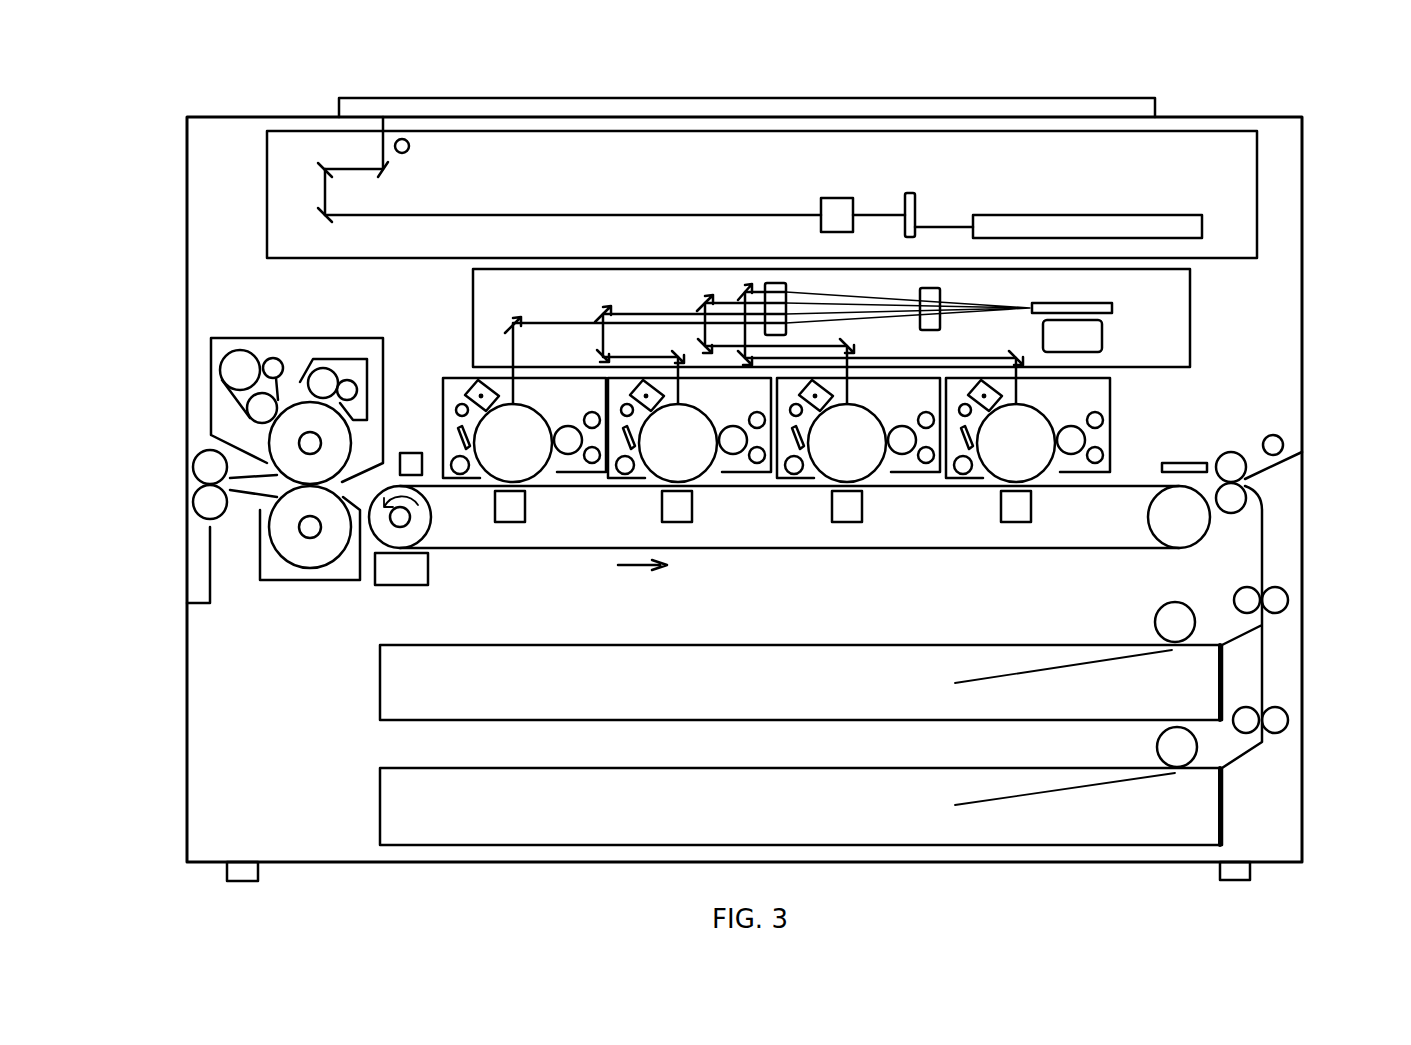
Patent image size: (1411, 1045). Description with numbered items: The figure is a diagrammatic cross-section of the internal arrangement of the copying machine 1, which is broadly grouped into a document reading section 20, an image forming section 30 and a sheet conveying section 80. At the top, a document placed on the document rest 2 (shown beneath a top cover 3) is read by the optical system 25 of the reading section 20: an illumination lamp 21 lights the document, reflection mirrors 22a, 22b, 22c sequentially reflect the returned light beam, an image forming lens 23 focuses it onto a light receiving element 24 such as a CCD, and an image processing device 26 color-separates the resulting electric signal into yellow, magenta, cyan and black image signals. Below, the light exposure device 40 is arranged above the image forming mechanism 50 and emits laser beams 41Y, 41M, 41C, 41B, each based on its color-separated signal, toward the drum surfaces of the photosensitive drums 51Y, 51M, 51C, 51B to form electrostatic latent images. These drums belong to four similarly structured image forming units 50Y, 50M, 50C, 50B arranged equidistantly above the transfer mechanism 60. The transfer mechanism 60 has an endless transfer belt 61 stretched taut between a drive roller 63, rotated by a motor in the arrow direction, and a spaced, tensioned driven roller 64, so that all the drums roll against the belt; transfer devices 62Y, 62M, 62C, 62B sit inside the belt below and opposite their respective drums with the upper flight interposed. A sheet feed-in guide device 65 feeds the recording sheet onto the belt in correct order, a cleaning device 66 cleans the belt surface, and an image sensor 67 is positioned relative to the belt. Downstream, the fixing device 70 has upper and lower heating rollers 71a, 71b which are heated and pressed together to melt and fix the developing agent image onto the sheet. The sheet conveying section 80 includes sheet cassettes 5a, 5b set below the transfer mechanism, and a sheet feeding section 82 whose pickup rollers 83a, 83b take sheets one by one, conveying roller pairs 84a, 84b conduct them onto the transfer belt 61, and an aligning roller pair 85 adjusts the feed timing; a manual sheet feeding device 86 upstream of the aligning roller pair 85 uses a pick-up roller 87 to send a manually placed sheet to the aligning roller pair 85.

The copying machine 1 is at (150, 352).
The document rest 2 is at (1197, 117).
The top cover 3 is at (790, 100).
The document reading section 20 is at (1268, 216).
The illumination lamp 21 is at (409, 146).
The reflection mirror 22a is at (386, 172).
The reflection mirror 22b is at (320, 170).
The reflection mirror 22c is at (320, 216).
The image forming lens 23 is at (838, 198).
The light receiving element 24 is at (912, 193).
The optical system 25 is at (592, 180).
The image processing device 26 is at (1156, 215).
The light exposure device 40 is at (1190, 306).
The laser beam 41B is at (550, 325).
The laser beam 41C is at (648, 316).
The laser beam 41M is at (718, 300).
The laser beam 41Y is at (810, 305).
The image forming section 30 is at (1230, 380).
The image forming mechanism 50 is at (1113, 430).
The image forming unit 50B is at (524, 456).
The image forming unit 50C is at (689, 456).
The image forming unit 50M is at (870, 456).
The image forming unit 50Y is at (1066, 428).
The photosensitive drum 51B is at (513, 443).
The photosensitive drum 51C is at (678, 443).
The photosensitive drum 51M is at (847, 443).
The photosensitive drum 51Y is at (1016, 443).
The transfer mechanism 60 is at (785, 560).
The transfer belt 61 is at (1012, 549).
The transfer device 62B is at (510, 522).
The transfer device 62C is at (682, 522).
The transfer device 62M is at (847, 522).
The transfer device 62Y is at (1031, 507).
The drive roller 63 is at (432, 517).
The driven roller 64 is at (1179, 548).
The sheet feed-in guide device 65 is at (1175, 464).
The cleaning device 66 is at (418, 575).
The image sensor 67 is at (411, 453).
The fixing device 70 is at (292, 338).
The heating roller 71a is at (270, 443).
The heating roller 71b is at (308, 568).
The sheet conveying section 80 is at (1272, 536).
The sheet feeding section 82 is at (1280, 677).
The pickup roller 83a is at (1155, 620).
The pickup roller 83b is at (1157, 750).
The conveying roller pair 84a is at (1288, 600).
The conveying roller pair 84b is at (1288, 722).
The aligning roller pair 85 is at (1231, 513).
The manual sheet feeding device 86 is at (1320, 448).
The pick-up roller 87 is at (1272, 435).
The sheet cassette 5a is at (382, 684).
The sheet cassette 5b is at (382, 808).